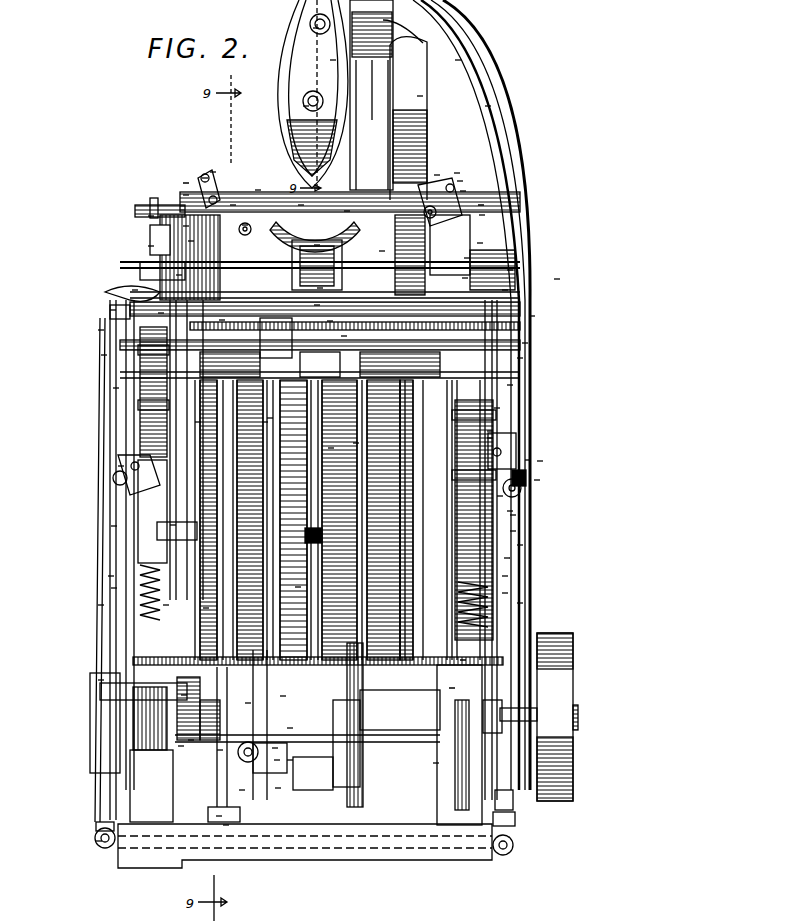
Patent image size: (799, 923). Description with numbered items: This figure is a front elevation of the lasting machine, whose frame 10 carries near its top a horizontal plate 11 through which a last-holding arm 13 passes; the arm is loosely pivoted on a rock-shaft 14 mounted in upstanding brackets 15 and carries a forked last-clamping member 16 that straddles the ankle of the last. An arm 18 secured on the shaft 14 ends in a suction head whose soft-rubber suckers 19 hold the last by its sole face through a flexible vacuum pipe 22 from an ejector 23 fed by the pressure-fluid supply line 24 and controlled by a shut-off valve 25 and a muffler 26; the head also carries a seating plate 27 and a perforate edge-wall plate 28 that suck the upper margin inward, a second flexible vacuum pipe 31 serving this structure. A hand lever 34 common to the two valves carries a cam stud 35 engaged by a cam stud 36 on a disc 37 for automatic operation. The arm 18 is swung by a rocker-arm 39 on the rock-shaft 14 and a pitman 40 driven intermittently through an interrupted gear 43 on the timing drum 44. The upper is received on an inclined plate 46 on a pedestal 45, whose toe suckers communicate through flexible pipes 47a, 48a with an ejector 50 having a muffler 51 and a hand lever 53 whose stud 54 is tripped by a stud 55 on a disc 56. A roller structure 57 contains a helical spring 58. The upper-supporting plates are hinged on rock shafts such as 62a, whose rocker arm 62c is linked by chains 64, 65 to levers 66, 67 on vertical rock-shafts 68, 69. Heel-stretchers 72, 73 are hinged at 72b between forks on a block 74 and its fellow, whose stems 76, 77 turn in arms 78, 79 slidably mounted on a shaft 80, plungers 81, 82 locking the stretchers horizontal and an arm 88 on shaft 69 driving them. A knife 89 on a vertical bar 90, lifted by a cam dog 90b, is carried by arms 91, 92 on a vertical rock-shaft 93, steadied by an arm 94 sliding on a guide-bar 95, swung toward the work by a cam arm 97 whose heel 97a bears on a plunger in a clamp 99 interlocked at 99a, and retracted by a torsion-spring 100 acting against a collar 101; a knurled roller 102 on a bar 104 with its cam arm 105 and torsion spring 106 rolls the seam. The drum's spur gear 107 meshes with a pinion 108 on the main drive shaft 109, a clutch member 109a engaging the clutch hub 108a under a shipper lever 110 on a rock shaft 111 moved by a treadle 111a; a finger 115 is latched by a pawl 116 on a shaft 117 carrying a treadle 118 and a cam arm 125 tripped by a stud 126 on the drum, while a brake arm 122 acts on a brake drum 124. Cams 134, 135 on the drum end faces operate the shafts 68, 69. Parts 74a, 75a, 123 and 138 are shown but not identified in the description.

The frame 10 is at (490, 440).
The horizontal plate 11 is at (344, 338).
The last-holding arm 13 is at (317, 247).
The rock-shaft 14 is at (482, 217).
The upstanding brackets 15 is at (185, 185).
The forked last-clamping member 16 is at (330, 323).
The arm 18 is at (420, 98).
The suckers 19 is at (315, 30).
The flexible vacuum pipe 22 is at (458, 62).
The ejector 23 is at (497, 410).
The pressure-fluid supply line 24 is at (98, 843).
The shut-off valve 25 is at (528, 462).
The muffler 26 is at (505, 578).
The plate 27 is at (305, 108).
The perforate edge-wall plate 28 is at (333, 62).
The flexible vacuum pipe 31 is at (488, 108).
The hand lever 34 is at (525, 345).
The cam stud 35 is at (540, 463).
The cam stud 36 is at (505, 595).
The disc 37 is at (513, 517).
The rocker-arm 39 is at (460, 183).
The pitman 40 is at (457, 175).
The interrupted gear 43 is at (435, 765).
The timing drum 44 is at (330, 450).
The pedestal 45 is at (317, 307).
The inclined plate 46 is at (382, 253).
The flexible pipe 47a is at (112, 312).
The flexible pipe 48a is at (135, 292).
The ejector 50 is at (115, 390).
The muffler 51 is at (100, 607).
The hand lever 53 is at (100, 332).
The stud 54 is at (120, 468).
The stud 55 is at (113, 590).
The disc 56 is at (113, 528).
The roller structure 57 is at (347, 213).
The helical spring 58 is at (312, 538).
The rock shaft 62a is at (213, 172).
The rocker arm 62c is at (205, 178).
The chain 64 is at (185, 197).
The chain 65 is at (463, 193).
The lever 66 is at (150, 218).
The lever 67 is at (480, 245).
The vertical rock-shaft 68 is at (178, 277).
The vertical rock-shaft 69 is at (467, 260).
The heel-stretcher 72 is at (233, 205).
The hinge 72b is at (245, 225).
The heel-stretcher 73 is at (320, 290).
The block 74 is at (190, 243).
The rod 74a is at (258, 190).
The arm 75a is at (557, 281).
The stem 76 is at (150, 248).
The stem 77 is at (465, 280).
The arm 78 is at (103, 357).
The arm 79 is at (520, 360).
The shaft 80 is at (270, 420).
The plunger 81 is at (222, 322).
The plunger 82 is at (437, 177).
The arm 88 is at (510, 272).
The knife 89 is at (505, 292).
The vertical bar 90 is at (355, 445).
The cam dog 90b is at (298, 587).
The horizontal arm 91 is at (532, 318).
The horizontal arm 92 is at (452, 690).
The vertical rock-shaft 93 is at (490, 433).
The arm 94 is at (160, 315).
The vertical guide-bar 95 is at (185, 228).
The cam arm 97 is at (513, 533).
The heel 97a is at (500, 498).
The clamp 99 is at (537, 482).
The interlocking portions 99a is at (510, 513).
The torsion-spring 100 is at (520, 605).
The collar 101 is at (507, 560).
The knurled roller 102 is at (300, 205).
The bar 104 is at (265, 424).
The cam arm 105 is at (172, 527).
The torsion spring 106 is at (110, 578).
The spur gear 107 is at (165, 607).
The pinion 108 is at (100, 682).
The clutch hub 108a is at (220, 750).
The main drive shaft 109 is at (290, 730).
The clutch member 109a is at (283, 698).
The shipper lever 110 is at (275, 750).
The rock shaft 111 is at (277, 762).
The treadle 111a is at (242, 790).
The finger 115 is at (290, 762).
The latch-pawl 116 is at (278, 790).
The shaft 117 is at (226, 825).
The treadle 118 is at (218, 818).
The brake arm 122 is at (180, 748).
The lever 123 is at (190, 742).
The brake drum 124 is at (183, 697).
The cam arm 125 is at (247, 705).
The stud 126 is at (205, 610).
The cam 134 is at (197, 424).
The cam 135 is at (510, 387).
The rod 138 is at (520, 547).